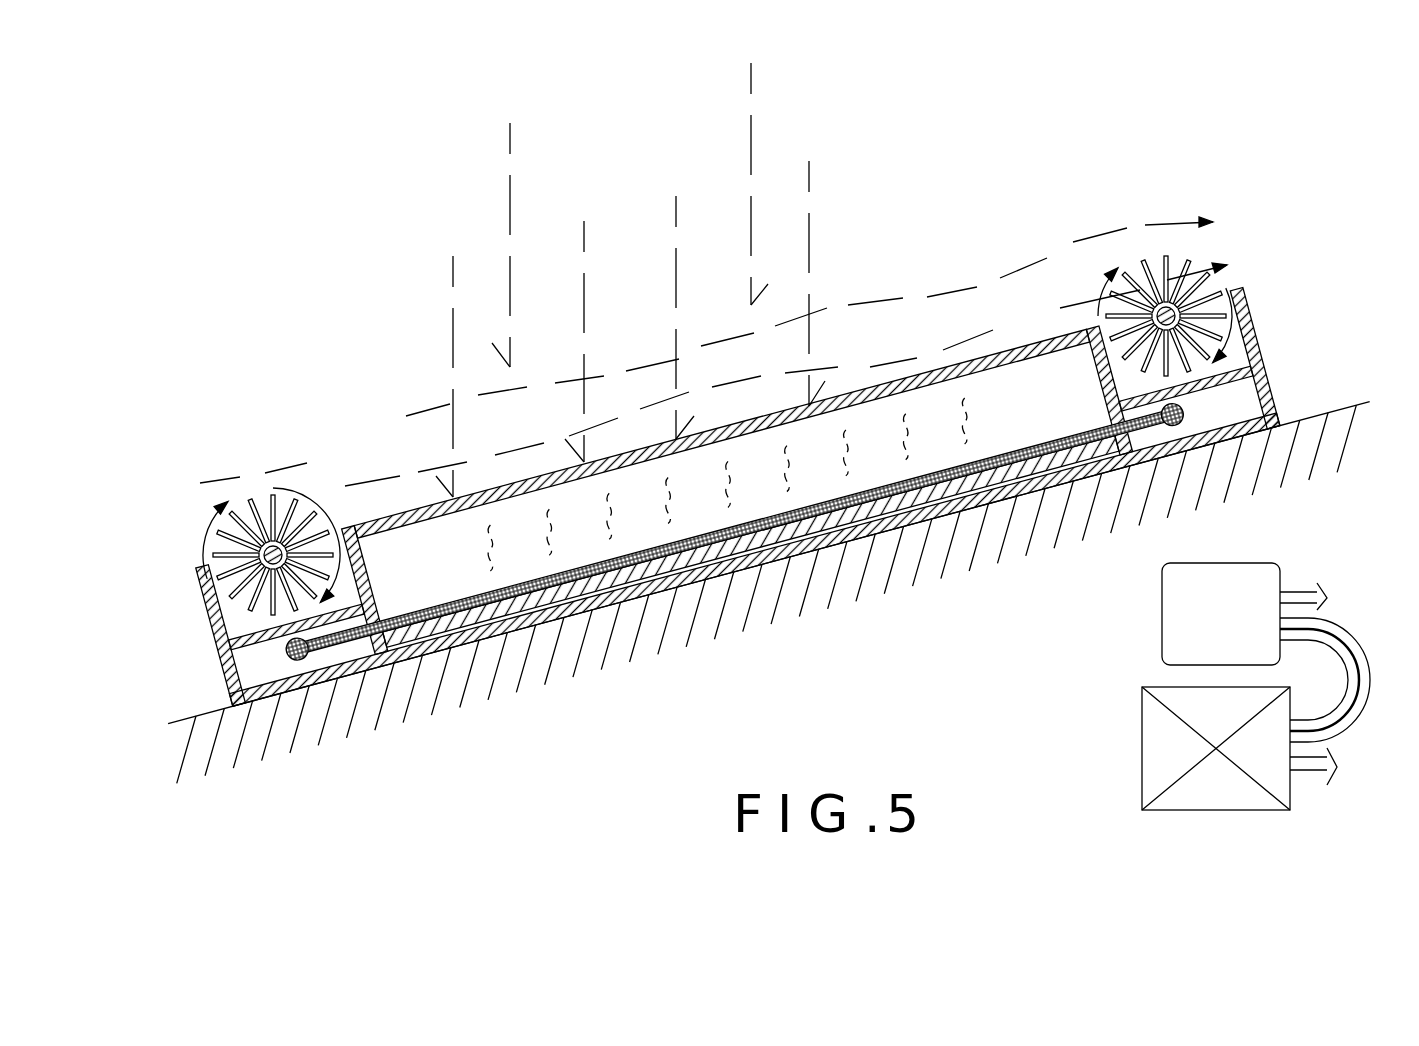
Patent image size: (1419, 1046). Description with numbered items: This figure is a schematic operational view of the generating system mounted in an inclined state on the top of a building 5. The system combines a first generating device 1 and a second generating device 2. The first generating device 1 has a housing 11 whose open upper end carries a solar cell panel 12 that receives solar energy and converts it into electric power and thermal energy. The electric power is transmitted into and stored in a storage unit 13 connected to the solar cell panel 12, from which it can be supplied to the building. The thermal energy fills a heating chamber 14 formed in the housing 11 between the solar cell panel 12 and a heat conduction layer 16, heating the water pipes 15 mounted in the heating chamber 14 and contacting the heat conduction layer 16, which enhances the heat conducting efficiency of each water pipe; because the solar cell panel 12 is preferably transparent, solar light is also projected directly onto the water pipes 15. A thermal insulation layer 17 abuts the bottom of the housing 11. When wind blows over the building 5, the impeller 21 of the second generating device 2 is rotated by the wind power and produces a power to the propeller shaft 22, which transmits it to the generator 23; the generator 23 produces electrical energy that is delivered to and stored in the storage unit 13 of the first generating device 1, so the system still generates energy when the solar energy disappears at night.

The first generating device 1 is at (1007, 147).
The second generating device 2 is at (133, 670).
The building 5 is at (647, 643).
The housing 11 is at (1070, 333).
The solar cell panel 12 is at (1020, 345).
The storage unit 13 is at (1178, 615).
The heating chamber 14 is at (940, 372).
The water pipes 15 is at (820, 475).
The heat conduction layer 16 is at (780, 525).
The thermal insulation layer 17 is at (722, 545).
The impeller 21 is at (273, 492).
The propeller shaft 22 is at (217, 580).
The generator 23 is at (1168, 745).